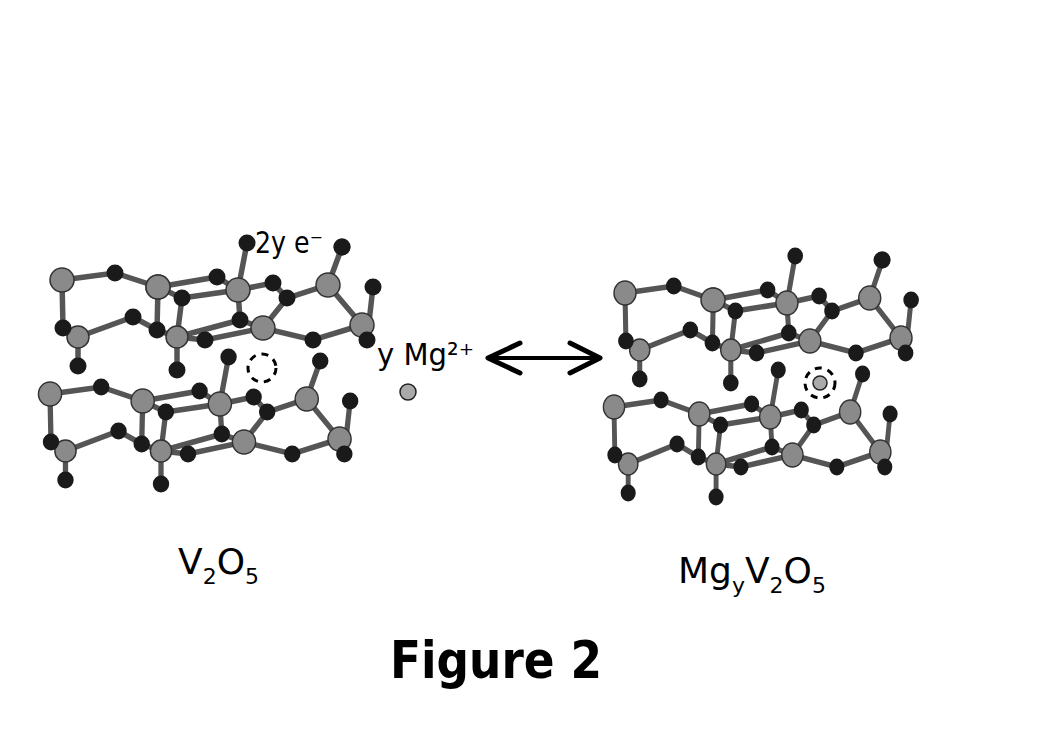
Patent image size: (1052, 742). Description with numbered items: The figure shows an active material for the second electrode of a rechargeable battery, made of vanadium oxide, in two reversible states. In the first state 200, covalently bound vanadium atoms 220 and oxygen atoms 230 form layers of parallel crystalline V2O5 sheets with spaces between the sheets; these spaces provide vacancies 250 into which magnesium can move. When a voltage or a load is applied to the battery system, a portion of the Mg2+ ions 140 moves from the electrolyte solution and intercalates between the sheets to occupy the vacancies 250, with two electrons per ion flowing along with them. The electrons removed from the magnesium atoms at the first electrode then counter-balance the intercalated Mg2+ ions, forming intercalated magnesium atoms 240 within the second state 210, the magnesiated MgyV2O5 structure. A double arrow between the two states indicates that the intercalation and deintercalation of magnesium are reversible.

The first state 200 is at (124, 176).
The second state 210 is at (613, 147).
The vanadium atoms 220 is at (168, 292).
The oxygen atoms 230 is at (343, 248).
The vacancies 250 is at (292, 370).
The Mg2+ ions 140 is at (408, 400).
The intercalated magnesium atoms 240 is at (821, 392).